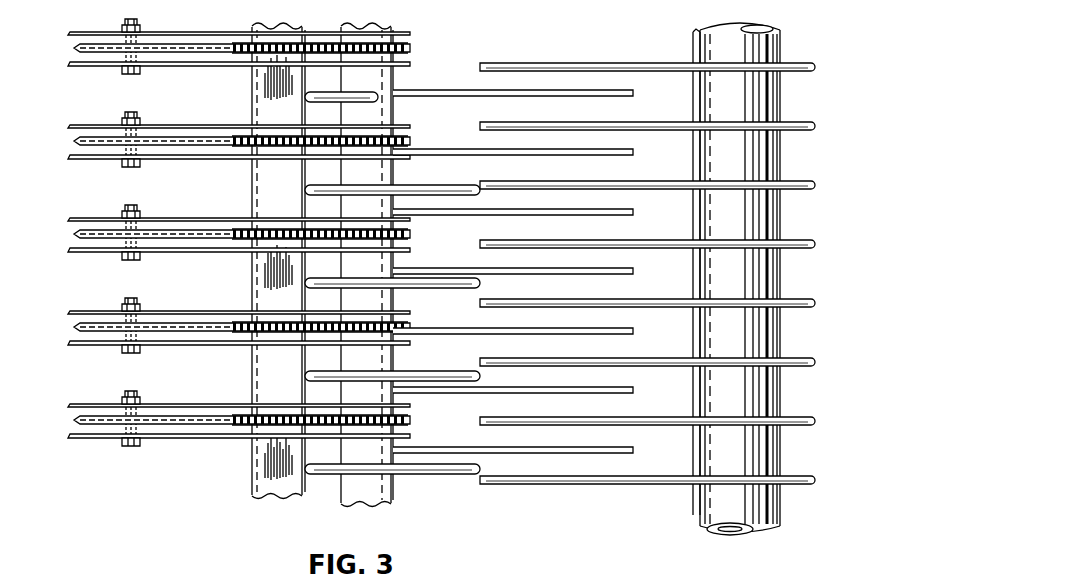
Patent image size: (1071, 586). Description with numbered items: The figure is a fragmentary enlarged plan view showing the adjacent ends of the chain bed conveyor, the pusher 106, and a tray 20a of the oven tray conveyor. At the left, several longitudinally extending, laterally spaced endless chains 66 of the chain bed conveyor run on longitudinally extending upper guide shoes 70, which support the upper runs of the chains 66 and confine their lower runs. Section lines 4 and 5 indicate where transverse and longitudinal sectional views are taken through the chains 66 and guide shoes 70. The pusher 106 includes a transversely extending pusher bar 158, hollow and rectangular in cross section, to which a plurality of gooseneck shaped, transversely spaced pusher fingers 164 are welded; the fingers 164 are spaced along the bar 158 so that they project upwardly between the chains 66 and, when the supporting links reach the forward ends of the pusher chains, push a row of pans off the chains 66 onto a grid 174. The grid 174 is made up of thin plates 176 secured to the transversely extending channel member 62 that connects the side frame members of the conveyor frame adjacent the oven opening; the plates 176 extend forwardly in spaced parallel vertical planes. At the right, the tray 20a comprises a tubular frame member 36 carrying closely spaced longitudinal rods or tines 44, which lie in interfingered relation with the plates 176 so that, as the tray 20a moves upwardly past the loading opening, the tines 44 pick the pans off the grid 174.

The endless chains 66 is at (240, 56).
The upper guide shoes 70 is at (154, 414).
The pusher 106 is at (250, 485).
The pusher bar 158 is at (252, 495).
The channel member 62 is at (393, 498).
The pusher fingers 164 is at (417, 288).
The grid 174 is at (437, 88).
The thin plates 176 is at (430, 268).
The rods or tines 44 is at (648, 263).
The roller drum 20a is at (670, 489).
The front tubular frame member 36 is at (713, 535).
The section line 4- 4 is at (53, 320).
The section line 5- 5 is at (93, 468).